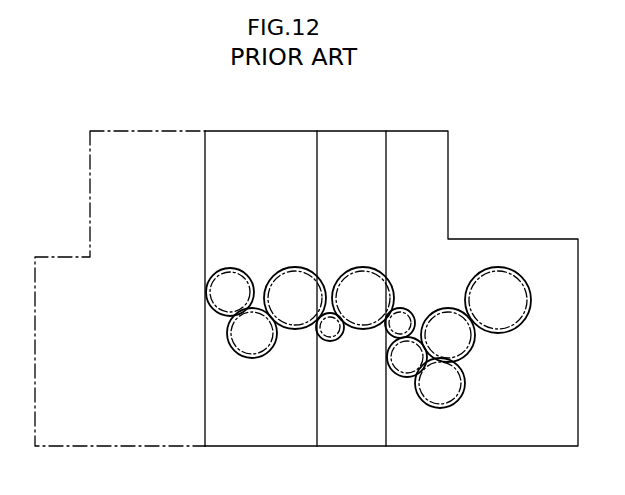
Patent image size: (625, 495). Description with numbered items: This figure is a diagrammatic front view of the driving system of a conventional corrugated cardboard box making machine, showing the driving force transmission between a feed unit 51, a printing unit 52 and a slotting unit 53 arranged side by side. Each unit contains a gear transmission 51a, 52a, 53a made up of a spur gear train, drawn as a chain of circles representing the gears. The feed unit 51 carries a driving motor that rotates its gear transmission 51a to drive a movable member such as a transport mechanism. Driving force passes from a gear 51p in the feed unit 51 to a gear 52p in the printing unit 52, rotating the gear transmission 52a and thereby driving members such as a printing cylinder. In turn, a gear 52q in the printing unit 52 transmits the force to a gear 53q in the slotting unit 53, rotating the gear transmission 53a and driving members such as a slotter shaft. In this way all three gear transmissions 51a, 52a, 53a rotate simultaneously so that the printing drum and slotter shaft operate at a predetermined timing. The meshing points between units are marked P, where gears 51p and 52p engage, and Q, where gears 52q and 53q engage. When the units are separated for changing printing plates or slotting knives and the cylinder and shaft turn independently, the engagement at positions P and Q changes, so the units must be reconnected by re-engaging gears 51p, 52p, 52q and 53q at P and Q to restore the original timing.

The feed unit 51 is at (505, 239).
The printing unit 52 is at (340, 131).
The slotting unit 53 is at (252, 131).
The gear 51p is at (412, 314).
The gear 52p is at (358, 268).
The gear 53q is at (292, 267).
The gear transmission 51a is at (478, 345).
The gear transmission 52a is at (365, 333).
The gear transmission 53a is at (255, 358).
The gear 52q is at (330, 341).
The gear engagement position P is at (402, 286).
The gear engagement position Q is at (308, 340).